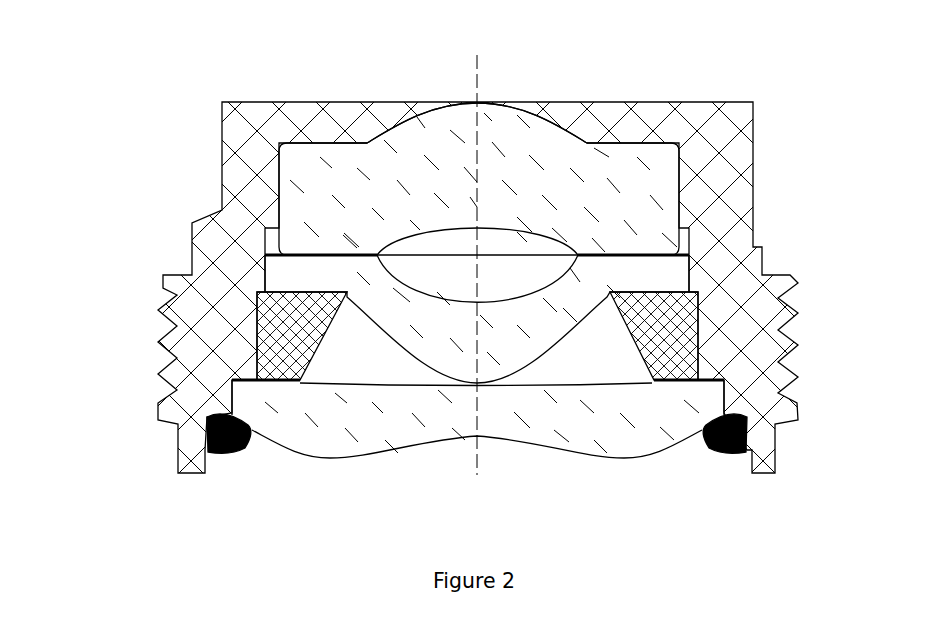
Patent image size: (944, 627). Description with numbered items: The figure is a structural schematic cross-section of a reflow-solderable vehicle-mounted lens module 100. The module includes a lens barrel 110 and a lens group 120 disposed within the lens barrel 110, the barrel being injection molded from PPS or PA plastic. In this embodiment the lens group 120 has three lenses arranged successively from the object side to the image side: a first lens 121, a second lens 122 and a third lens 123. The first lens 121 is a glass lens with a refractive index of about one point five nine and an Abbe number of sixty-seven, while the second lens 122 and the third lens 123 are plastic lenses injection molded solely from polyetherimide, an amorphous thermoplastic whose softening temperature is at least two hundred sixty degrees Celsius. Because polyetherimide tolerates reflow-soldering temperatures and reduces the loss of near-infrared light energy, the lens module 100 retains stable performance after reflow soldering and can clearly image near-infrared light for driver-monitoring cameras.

The vehicle-mounted lens module 100 is at (288, 35).
The lens barrel 110 is at (753, 202).
The lens group 120 is at (90, 230).
The first lens 121 is at (277, 193).
The second lens 122 is at (262, 293).
The third lens 123 is at (230, 415).